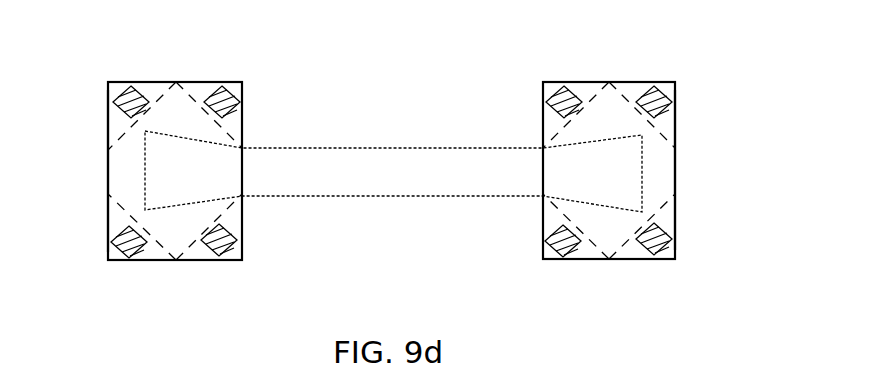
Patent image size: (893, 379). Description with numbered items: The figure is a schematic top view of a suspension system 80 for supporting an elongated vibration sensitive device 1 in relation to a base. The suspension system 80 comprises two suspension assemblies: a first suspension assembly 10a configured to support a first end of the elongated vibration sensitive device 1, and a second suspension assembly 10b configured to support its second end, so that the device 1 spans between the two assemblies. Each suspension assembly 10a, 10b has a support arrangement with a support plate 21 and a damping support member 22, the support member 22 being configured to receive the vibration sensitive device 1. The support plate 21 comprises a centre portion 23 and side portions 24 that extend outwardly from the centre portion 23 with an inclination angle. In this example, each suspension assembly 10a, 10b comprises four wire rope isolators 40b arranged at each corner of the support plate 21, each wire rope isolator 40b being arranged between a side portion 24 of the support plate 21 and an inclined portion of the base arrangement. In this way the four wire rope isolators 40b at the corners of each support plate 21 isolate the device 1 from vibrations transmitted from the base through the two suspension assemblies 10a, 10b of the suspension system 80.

The vibration sensitive device 1 is at (346, 148).
The first suspension assembly 10a is at (110, 317).
The second suspension assembly 10b is at (625, 272).
The support plate 21 is at (602, 82).
The damping support member 22 is at (118, 168).
The centre portion 23 is at (174, 82).
The side portion 24 is at (106, 90).
The wire rope isolator 40b is at (108, 118).
The suspension system 80 is at (466, 66).